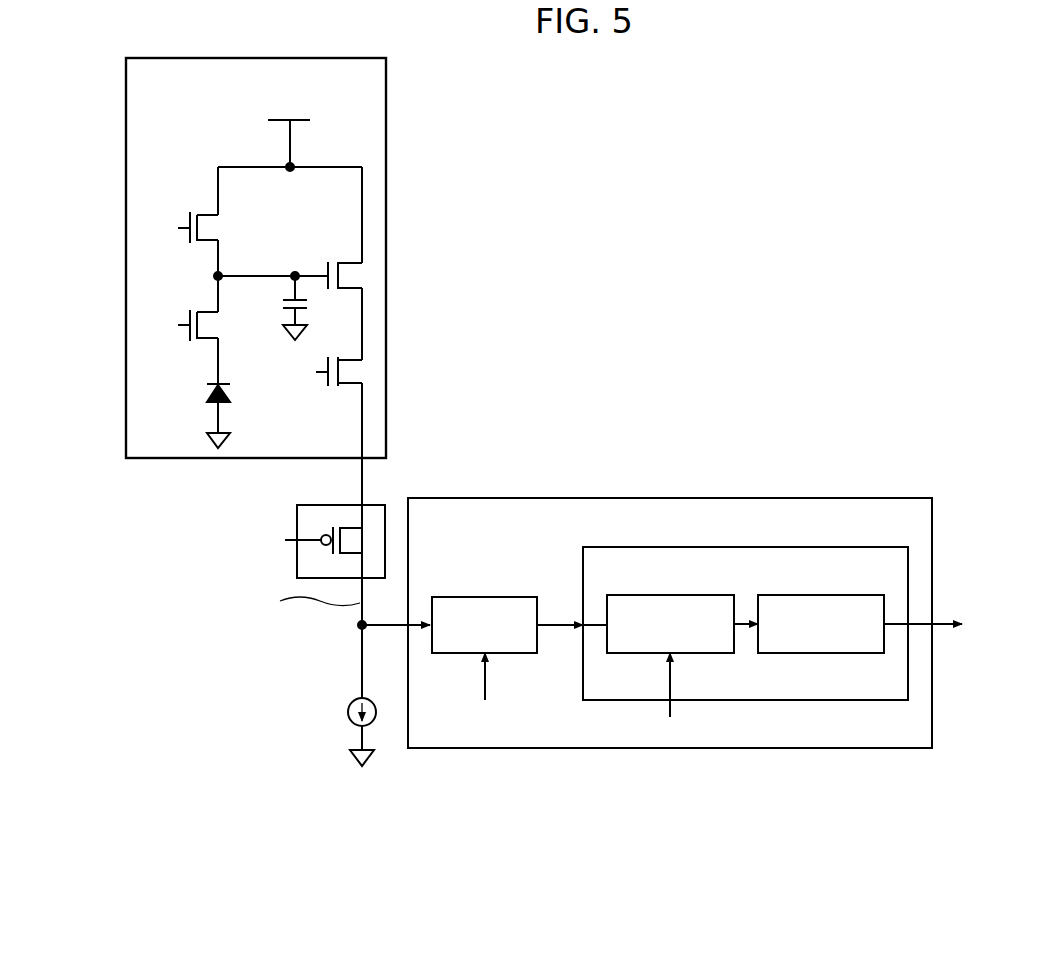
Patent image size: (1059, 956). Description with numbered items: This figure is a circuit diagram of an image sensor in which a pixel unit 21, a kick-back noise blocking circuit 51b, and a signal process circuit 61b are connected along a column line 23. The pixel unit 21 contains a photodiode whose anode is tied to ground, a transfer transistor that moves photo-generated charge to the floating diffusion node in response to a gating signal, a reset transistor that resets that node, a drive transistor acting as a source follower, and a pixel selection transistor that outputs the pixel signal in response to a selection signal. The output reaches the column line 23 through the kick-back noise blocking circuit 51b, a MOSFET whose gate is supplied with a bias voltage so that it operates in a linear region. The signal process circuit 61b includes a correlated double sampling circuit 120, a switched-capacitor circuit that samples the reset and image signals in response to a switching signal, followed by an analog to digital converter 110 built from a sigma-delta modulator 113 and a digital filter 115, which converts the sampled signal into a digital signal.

The pixel unit 21 is at (386, 208).
The column line 23 is at (362, 480).
The kick-back noise blocking circuit 51b is at (297, 508).
The signal process circuit 61b is at (838, 497).
The correlated double sampling circuit 120 is at (487, 597).
The analog to digital converter 110 is at (735, 700).
The sigma-delta modulator 113 is at (695, 653).
The digital filter 115 is at (848, 653).